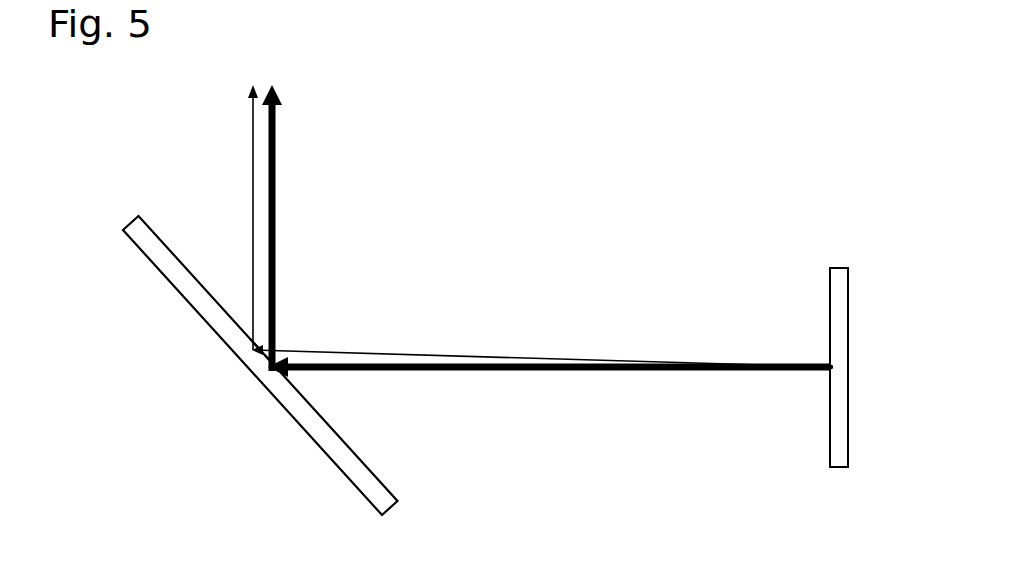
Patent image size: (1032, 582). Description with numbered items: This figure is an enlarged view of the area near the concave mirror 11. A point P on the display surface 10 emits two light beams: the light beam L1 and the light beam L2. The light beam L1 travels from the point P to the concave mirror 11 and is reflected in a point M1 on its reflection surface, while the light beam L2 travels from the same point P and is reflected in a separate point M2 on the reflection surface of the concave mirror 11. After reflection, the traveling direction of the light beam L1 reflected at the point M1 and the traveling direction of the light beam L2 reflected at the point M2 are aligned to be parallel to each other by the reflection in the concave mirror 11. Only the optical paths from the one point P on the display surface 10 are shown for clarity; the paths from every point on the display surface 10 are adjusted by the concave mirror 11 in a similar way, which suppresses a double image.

The display surface 10 is at (830, 433).
The concave mirror 11 is at (398, 499).
The light beam L1 is at (277, 178).
The light beam L2 is at (253, 178).
The point M1 is at (268, 370).
The point M2 is at (253, 349).
The point P is at (830, 366).